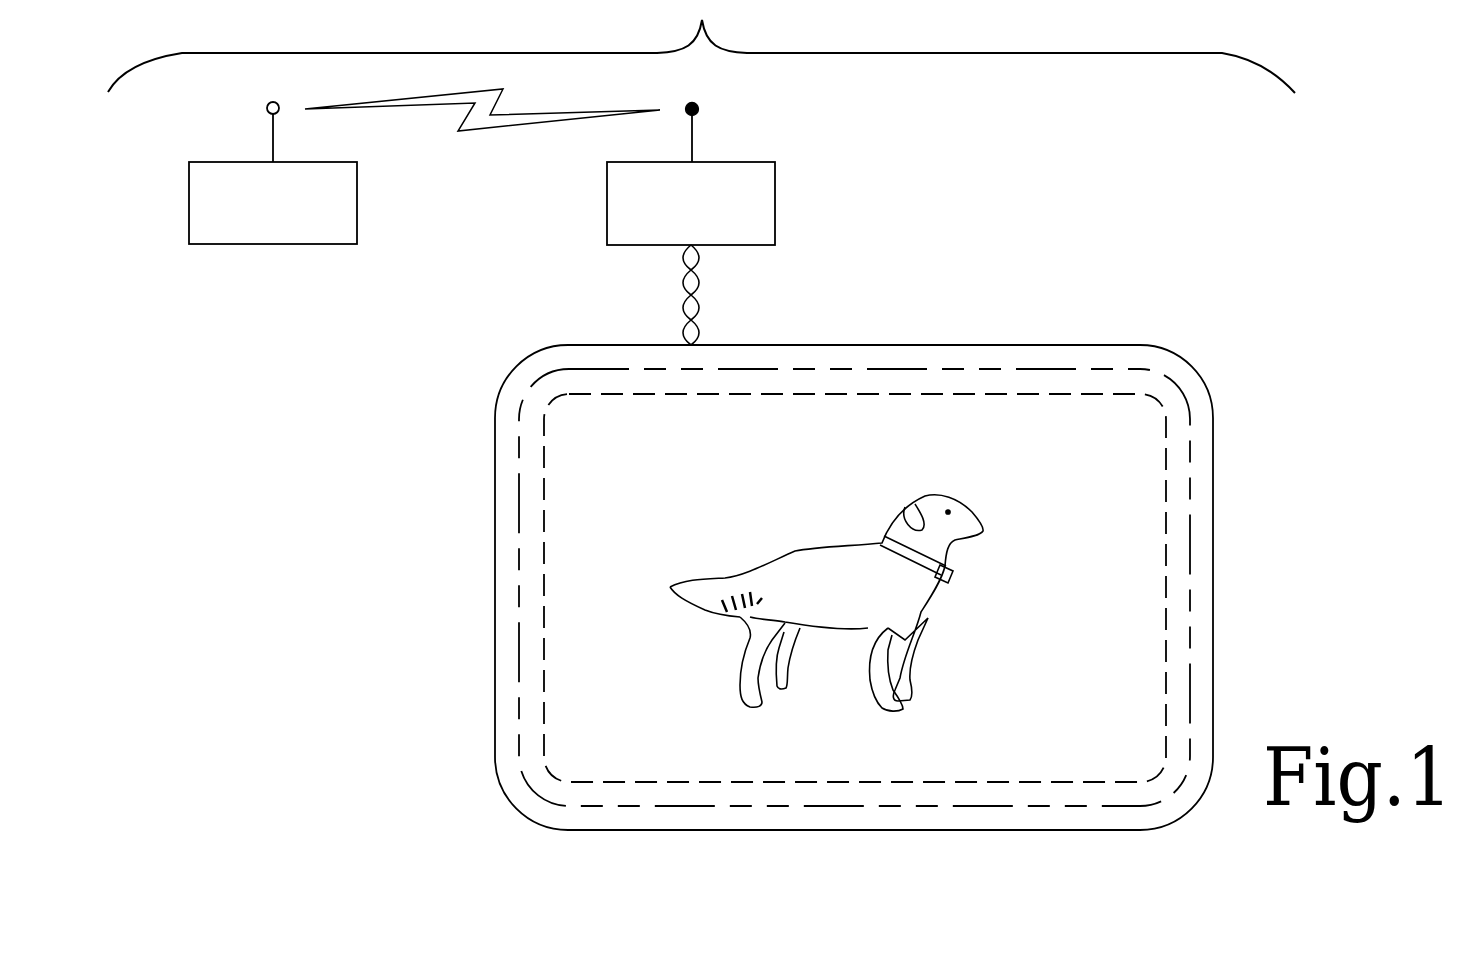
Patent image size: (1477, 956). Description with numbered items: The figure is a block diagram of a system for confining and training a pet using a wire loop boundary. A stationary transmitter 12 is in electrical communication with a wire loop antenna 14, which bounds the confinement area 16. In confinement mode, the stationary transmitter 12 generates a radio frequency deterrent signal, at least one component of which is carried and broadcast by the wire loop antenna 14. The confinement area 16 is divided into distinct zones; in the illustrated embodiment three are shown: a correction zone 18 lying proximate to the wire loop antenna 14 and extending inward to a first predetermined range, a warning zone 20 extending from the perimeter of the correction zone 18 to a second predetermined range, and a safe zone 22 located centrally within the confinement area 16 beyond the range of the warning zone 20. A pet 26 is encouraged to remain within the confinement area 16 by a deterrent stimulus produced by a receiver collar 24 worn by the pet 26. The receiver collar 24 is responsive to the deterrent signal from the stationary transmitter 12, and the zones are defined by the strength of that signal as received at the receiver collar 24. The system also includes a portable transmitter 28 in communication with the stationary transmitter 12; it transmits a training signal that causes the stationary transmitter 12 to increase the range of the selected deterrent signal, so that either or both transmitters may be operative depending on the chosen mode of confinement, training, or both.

The stationary transmitter 12 is at (776, 199).
The wire loop antenna 14 is at (962, 345).
The confinement area 16 is at (818, 556).
The correction zone 18 is at (1160, 352).
The warning zone 20 is at (1172, 396).
The safe zone 22 is at (1147, 457).
The receiver collar 24 is at (953, 578).
The pet 26 is at (842, 556).
The portable transmitter 28 is at (358, 199).